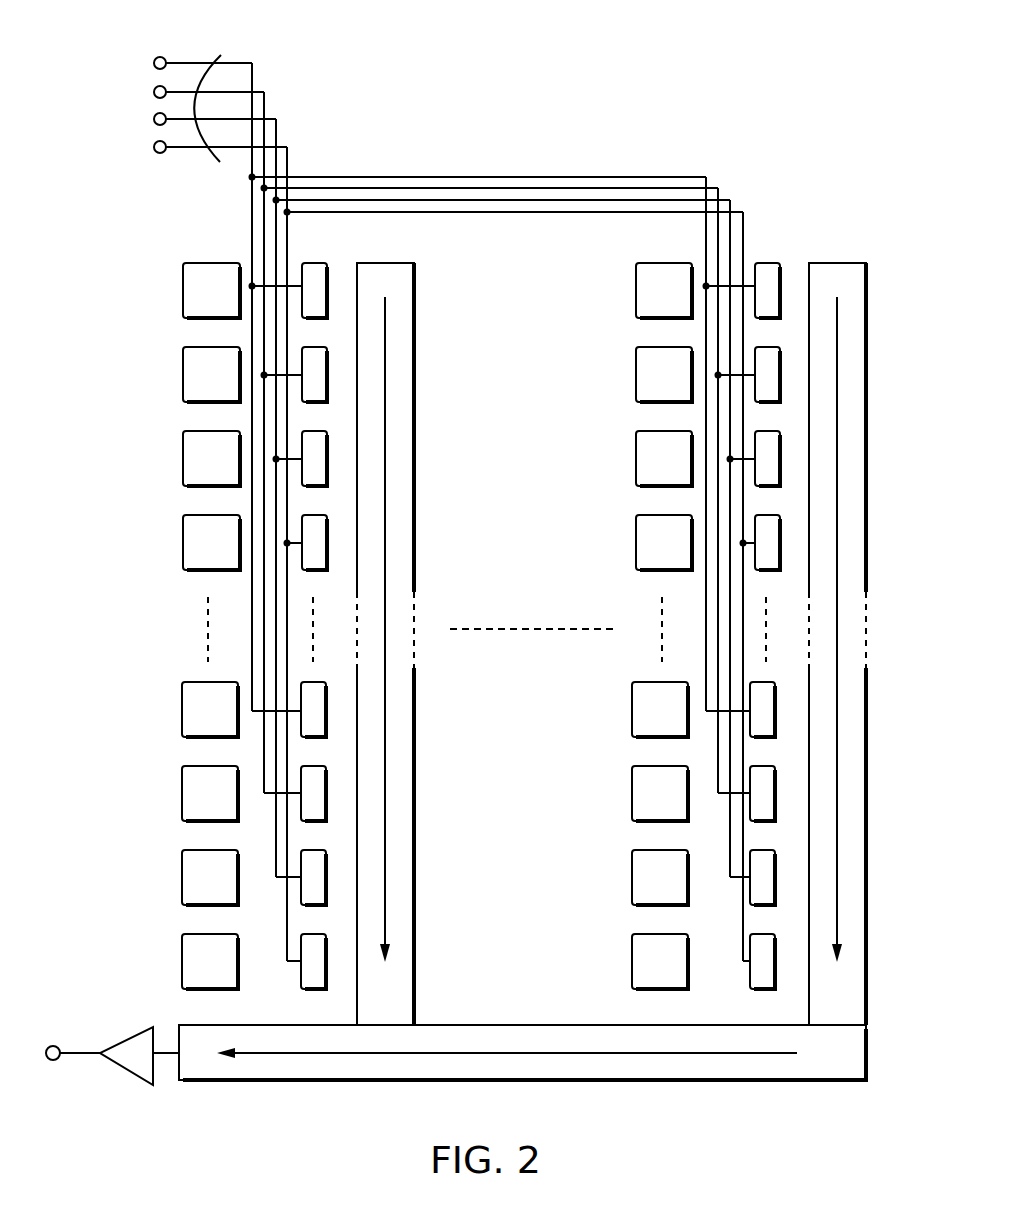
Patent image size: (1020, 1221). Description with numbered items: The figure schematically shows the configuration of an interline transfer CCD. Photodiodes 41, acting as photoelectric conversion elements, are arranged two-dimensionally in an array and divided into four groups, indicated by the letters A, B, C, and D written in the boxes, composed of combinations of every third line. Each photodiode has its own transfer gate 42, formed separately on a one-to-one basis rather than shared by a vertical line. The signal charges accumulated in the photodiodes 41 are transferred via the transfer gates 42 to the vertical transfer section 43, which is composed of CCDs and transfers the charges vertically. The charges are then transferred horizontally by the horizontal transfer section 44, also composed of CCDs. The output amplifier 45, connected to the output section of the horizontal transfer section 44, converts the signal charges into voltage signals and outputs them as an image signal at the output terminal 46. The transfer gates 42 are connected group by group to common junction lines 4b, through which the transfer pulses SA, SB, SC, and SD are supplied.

The common junction lines 4b is at (215, 48).
The photodiodes 41 is at (212, 262).
The transfer gates 42 is at (315, 262).
The vertical transfer section 43 is at (390, 262).
The horizontal transfer section 44 is at (822, 1082).
The output amplifier 45 is at (129, 1034).
The output terminal 46 is at (54, 1045).